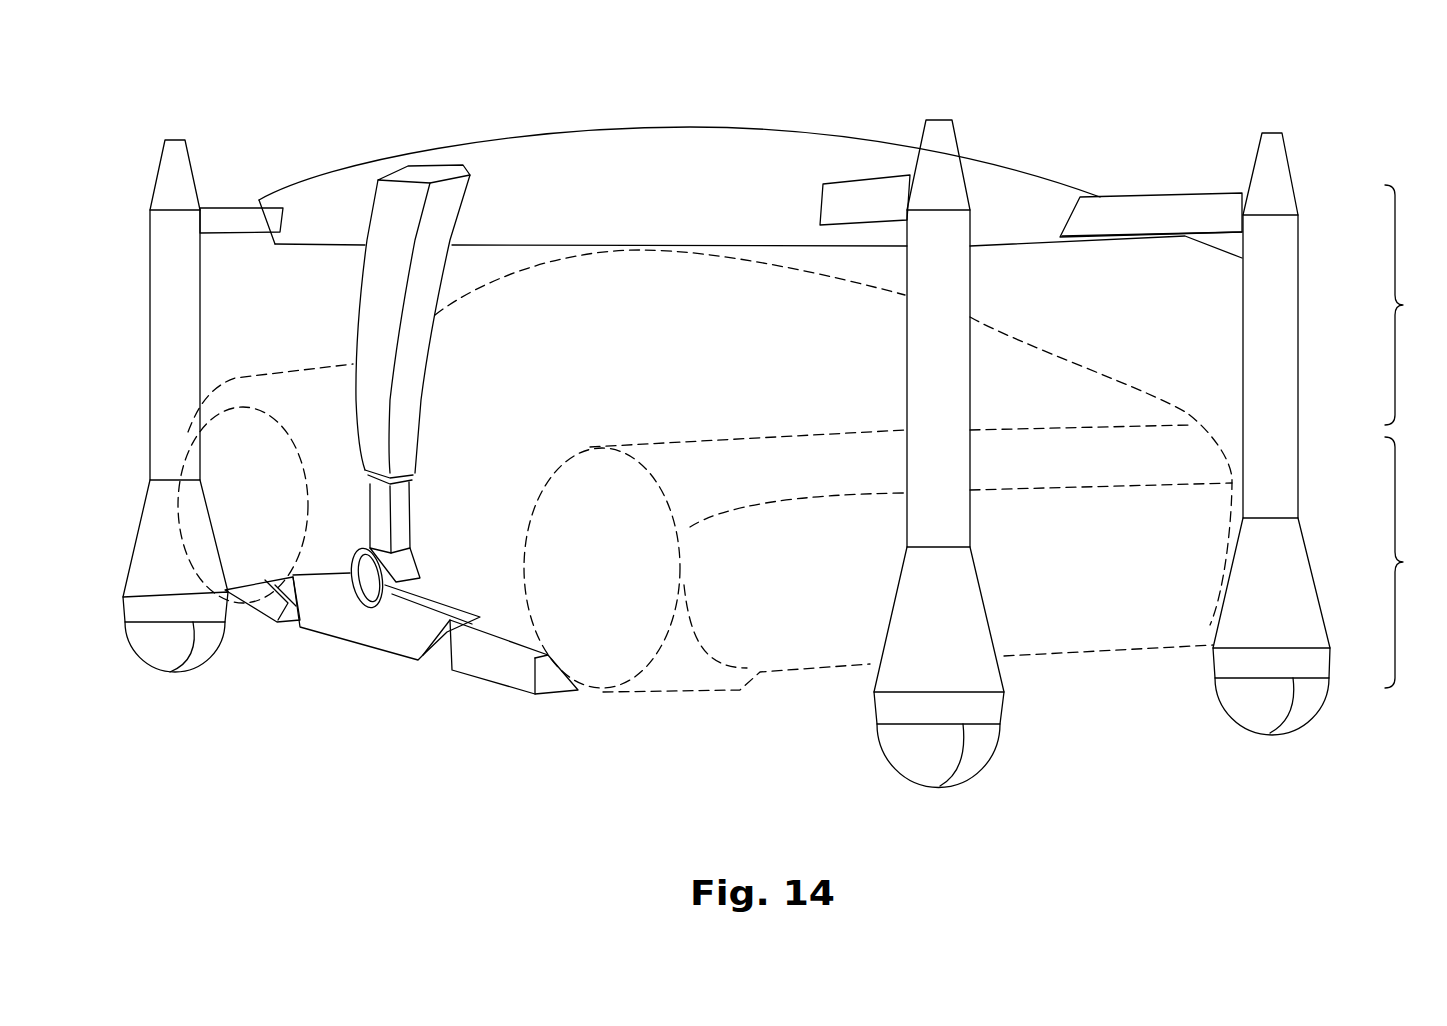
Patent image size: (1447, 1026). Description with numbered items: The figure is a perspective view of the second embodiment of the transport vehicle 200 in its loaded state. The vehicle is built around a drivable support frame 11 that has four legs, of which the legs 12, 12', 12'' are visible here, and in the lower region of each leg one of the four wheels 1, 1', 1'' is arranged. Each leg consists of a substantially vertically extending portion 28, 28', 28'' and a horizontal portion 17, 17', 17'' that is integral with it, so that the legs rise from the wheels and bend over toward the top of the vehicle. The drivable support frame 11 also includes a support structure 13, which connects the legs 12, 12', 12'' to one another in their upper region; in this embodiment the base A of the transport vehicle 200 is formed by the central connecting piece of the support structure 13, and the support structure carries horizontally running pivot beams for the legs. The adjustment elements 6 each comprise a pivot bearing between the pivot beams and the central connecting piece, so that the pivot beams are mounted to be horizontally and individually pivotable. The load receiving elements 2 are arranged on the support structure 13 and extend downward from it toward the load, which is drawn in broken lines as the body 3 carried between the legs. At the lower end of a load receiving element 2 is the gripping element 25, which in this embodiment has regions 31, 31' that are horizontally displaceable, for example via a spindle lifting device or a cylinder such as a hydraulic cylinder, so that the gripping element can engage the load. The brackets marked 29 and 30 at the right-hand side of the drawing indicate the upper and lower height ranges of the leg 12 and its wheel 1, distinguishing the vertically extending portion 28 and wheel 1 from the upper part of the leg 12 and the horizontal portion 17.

The transport vehicle 200 is at (400, 95).
The base A is at (678, 103).
The fuselage 3 is at (657, 362).
The support structure 13 is at (278, 172).
The horizontal portion 17'' is at (241, 262).
The horizontal portion 17' is at (865, 146).
The adjustment element 6 is at (1104, 173).
The horizontal portion 17 is at (1152, 179).
The load receiving element 2 is at (375, 290).
The gripping element 25 is at (348, 625).
The region 31 is at (261, 634).
The region 31' is at (500, 686).
The leg 12'' is at (138, 310).
The substantially vertically extending portion 28'' is at (152, 475).
The wheel 1'' is at (175, 667).
The leg 12' is at (979, 333).
The substantially vertically extending portion 28' is at (962, 566).
The wheel 1' is at (939, 770).
The drivable support frame 11 is at (1275, 320).
The leg 12 is at (1302, 366).
The substantially vertically extending portion 28 is at (1287, 552).
The wheel 1 is at (1271, 728).
The upper section 29 is at (1416, 305).
The lower section 30 is at (1416, 562).